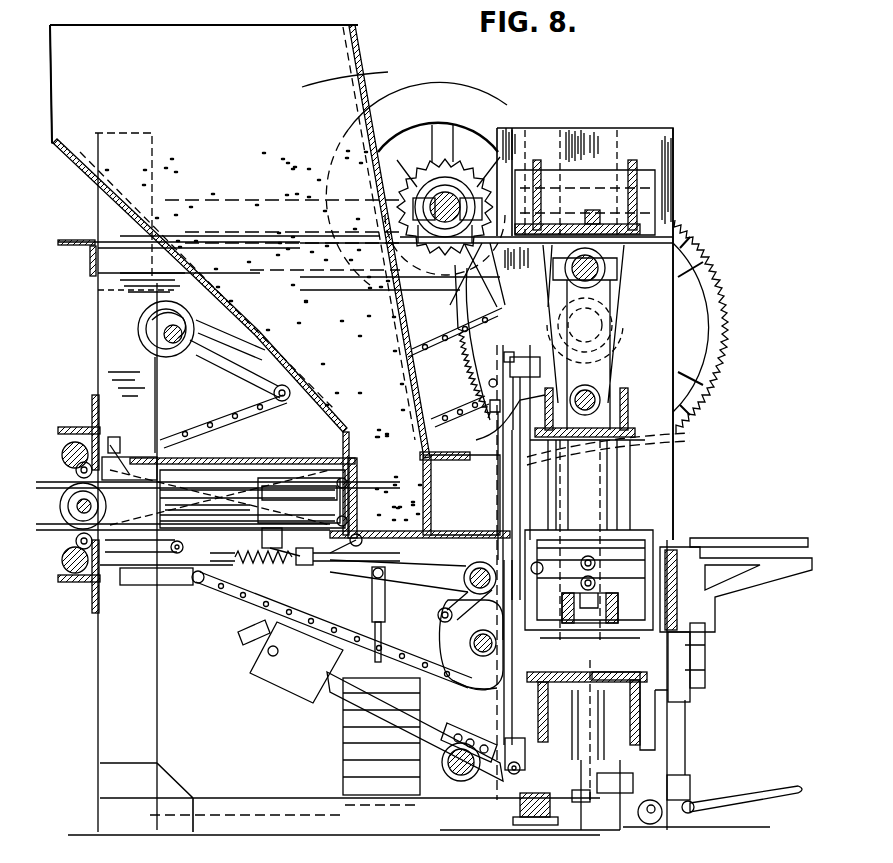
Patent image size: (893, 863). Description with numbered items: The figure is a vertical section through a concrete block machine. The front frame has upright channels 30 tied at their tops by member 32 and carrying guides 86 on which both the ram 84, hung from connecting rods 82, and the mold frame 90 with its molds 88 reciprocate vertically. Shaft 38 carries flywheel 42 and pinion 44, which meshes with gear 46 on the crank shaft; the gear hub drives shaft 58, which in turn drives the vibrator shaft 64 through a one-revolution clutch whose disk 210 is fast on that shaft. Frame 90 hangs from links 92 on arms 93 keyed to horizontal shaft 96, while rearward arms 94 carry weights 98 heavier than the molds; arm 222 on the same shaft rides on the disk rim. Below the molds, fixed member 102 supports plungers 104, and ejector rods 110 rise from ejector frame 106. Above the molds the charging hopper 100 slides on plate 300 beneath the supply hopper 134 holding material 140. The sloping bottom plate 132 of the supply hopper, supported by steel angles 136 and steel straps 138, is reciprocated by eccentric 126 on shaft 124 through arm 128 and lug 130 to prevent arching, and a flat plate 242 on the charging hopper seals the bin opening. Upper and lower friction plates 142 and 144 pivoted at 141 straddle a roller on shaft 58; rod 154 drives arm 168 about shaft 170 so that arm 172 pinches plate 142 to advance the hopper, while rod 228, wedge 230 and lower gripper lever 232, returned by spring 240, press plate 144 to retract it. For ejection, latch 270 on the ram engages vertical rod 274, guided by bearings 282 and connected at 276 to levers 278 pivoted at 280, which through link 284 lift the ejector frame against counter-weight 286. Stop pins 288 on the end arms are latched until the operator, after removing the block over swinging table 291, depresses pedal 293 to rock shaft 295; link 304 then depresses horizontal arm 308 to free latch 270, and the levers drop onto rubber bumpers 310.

The upright channels 30 is at (660, 486).
The member 32 is at (640, 182).
The shaft 38 is at (456, 180).
The flywheel 42 is at (432, 98).
The pinion 44 is at (447, 200).
The gear 46 is at (707, 283).
The shaft 58 is at (70, 514).
The vibrator shaft 64 is at (483, 653).
The connecting rod 82 is at (612, 390).
The ram 84 is at (620, 428).
The guides 86 is at (614, 488).
The molds 88 is at (643, 567).
The frame 90 is at (606, 618).
The links 92 is at (536, 588).
The arms 93 is at (574, 560).
The arms 94 is at (432, 590).
The horizontal shaft 96 is at (470, 560).
The weights 98 is at (365, 745).
The charging hopper 100 is at (425, 498).
The fixed member 102 is at (640, 734).
The plungers 104 is at (632, 660).
The ejector frame 106 is at (634, 782).
The ejector rods 110 is at (596, 702).
The shaft 124 is at (176, 352).
The eccentric 126 is at (140, 330).
The arm 128 is at (236, 378).
The lug 130 is at (286, 402).
The plate 132 is at (70, 148).
The supply bin or hopper 134 is at (353, 68).
The steel angles 136 is at (82, 182).
The steel straps 138 is at (98, 275).
The material 140 is at (250, 195).
The pivot 141 is at (315, 567).
The upper friction plate 142 is at (262, 480).
The lower friction plate 144 is at (254, 516).
The rod 154 is at (236, 470).
The arm 168 is at (140, 468).
The shaft 170 is at (62, 427).
The arm 172 is at (66, 461).
The disk 210 is at (458, 635).
The arm 222 is at (452, 618).
The rod 228 is at (366, 562).
The wedge 230 is at (202, 592).
The lower gripper lever 232 is at (180, 586).
The spring 240 is at (287, 565).
The flat plate 242 is at (210, 455).
The spring-actuated latch 270 is at (448, 458).
The vertical rod 274 is at (506, 706).
The connection 276 is at (521, 776).
The levers 278 is at (530, 845).
The pivot 280 is at (457, 772).
The bearings 282 is at (530, 370).
The link 284 is at (580, 828).
The counter-weight 286 is at (292, 680).
The stop pin 288 is at (537, 562).
The swinging table 291 is at (758, 538).
The pedal 293 is at (786, 792).
The shaft 295 is at (648, 824).
The plate 300 is at (352, 560).
The link 304 is at (478, 439).
The horizontal arm 308 is at (456, 416).
The rubber bumpers 310 is at (536, 820).